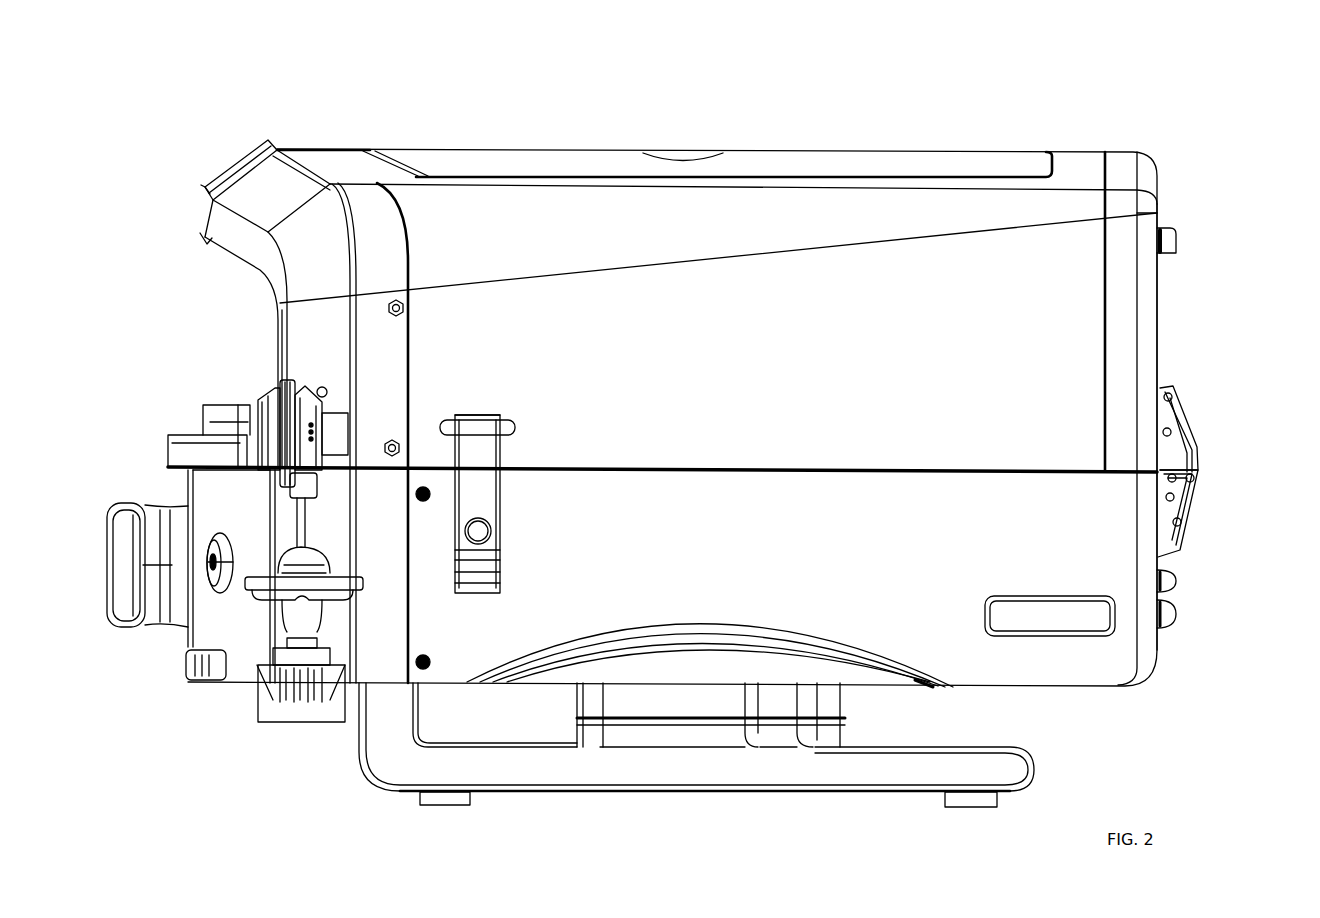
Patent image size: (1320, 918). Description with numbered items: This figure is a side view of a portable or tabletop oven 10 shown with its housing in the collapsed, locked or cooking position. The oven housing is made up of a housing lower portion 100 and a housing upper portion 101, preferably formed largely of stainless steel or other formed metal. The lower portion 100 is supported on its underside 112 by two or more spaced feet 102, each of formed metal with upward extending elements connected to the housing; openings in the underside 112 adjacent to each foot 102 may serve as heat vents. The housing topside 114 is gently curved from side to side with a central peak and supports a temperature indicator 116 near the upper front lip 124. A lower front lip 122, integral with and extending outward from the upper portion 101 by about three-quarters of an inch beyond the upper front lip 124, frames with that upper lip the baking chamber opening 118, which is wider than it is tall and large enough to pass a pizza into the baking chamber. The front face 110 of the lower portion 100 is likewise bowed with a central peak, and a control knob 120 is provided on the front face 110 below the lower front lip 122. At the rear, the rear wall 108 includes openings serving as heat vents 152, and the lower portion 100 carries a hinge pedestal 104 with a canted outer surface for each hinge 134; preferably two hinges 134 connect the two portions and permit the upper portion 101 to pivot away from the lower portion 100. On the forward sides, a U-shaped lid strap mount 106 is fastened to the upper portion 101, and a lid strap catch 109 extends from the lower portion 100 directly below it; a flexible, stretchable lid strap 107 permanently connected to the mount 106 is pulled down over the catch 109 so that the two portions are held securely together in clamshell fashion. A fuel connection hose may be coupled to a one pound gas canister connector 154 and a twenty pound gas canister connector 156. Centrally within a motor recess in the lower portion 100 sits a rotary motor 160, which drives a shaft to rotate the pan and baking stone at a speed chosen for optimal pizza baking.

The portable oven 10 is at (1063, 106).
The housing lower portion 100 is at (885, 548).
The housing upper portion 101 is at (885, 360).
The foot 102 is at (1030, 782).
The hinge pedestal 104 is at (1178, 532).
The lid strap mount 106 is at (511, 421).
The lid strap 107 is at (499, 490).
The rear wall 108 is at (1160, 315).
The lid strap catch 109 is at (492, 528).
The front face 110 is at (114, 467).
The underside 112 is at (929, 689).
The housing topside 114 is at (541, 150).
The temperature indicator 116 is at (234, 176).
The baking chamber opening 118 is at (210, 343).
The control knob 120 is at (132, 628).
The lower front lip 122 is at (175, 432).
The upper front lip 124 is at (203, 240).
The hinge 134 is at (1189, 413).
The heat vent 152 is at (1176, 239).
The one pound gas canister connector 154 is at (345, 411).
The twenty pound gas canister connector 156 is at (264, 721).
The rotary motor 160 is at (569, 704).